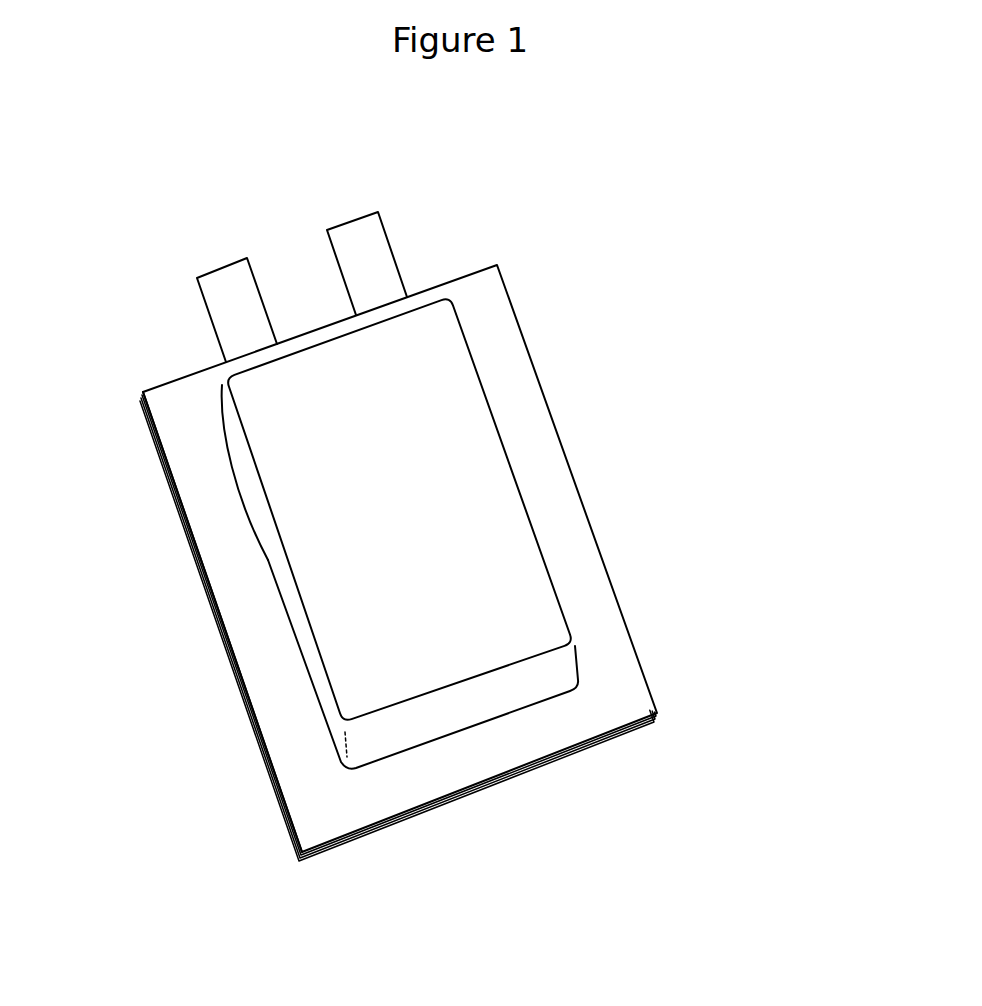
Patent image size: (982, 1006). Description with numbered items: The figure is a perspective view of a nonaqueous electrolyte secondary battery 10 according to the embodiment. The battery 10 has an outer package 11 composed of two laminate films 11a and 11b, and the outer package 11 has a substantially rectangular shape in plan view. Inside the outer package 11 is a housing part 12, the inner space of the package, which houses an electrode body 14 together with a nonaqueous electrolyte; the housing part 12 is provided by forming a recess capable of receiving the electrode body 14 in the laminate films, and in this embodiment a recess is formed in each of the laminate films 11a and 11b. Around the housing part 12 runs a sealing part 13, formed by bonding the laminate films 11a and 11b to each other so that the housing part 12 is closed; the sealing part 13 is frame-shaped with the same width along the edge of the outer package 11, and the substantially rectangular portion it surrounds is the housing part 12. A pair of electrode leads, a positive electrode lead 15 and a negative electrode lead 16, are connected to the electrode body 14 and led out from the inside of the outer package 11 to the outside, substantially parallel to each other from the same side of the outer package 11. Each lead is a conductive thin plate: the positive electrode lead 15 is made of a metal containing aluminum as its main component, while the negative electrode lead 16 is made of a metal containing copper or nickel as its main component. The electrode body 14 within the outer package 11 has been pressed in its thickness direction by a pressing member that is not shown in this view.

The nonaqueous electrolyte secondary battery 10 is at (620, 202).
The outer package 11 is at (790, 632).
The laminate film 11a is at (620, 675).
The laminate film 11b is at (643, 728).
The housing part 12 is at (290, 488).
The sealing part 13 is at (243, 622).
The electrode body 14 is at (458, 452).
The positive electrode lead 15 is at (222, 302).
The negative electrode lead 16 is at (367, 243).